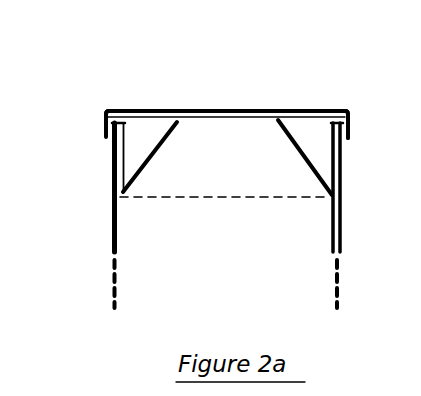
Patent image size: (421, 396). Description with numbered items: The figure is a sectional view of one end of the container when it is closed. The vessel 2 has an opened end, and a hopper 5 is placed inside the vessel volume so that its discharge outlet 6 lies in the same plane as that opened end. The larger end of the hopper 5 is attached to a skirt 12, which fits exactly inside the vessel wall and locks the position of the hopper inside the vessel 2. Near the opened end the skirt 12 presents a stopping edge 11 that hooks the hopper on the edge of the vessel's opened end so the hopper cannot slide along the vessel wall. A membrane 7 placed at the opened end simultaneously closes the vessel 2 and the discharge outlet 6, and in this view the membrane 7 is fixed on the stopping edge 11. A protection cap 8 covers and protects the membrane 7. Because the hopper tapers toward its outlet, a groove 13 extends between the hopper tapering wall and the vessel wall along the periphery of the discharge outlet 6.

The vessel 2 is at (111, 183).
The hopper 5 is at (300, 152).
The discharge outlet 6 is at (282, 115).
The membrane 7 is at (106, 115).
The protection cap 8 is at (222, 110).
The stopping edge 11 is at (347, 113).
The skirt 12 is at (122, 157).
The groove 13 is at (139, 143).